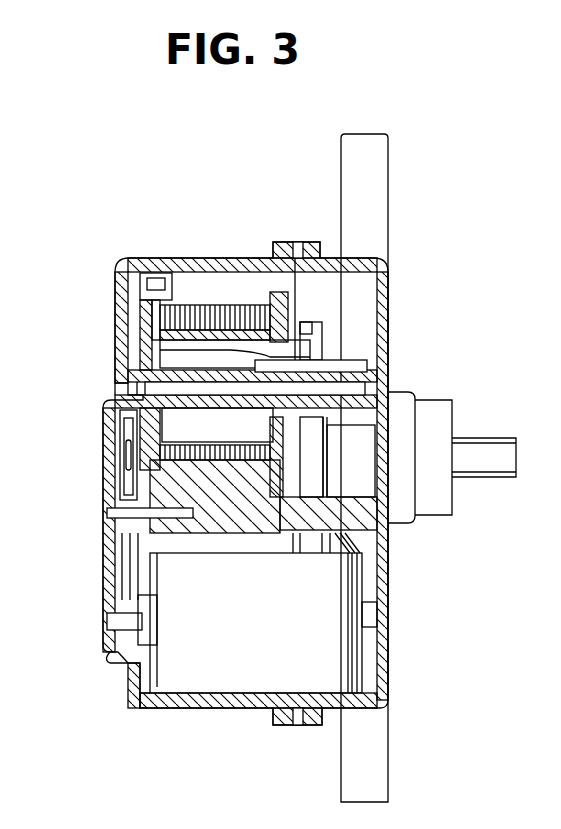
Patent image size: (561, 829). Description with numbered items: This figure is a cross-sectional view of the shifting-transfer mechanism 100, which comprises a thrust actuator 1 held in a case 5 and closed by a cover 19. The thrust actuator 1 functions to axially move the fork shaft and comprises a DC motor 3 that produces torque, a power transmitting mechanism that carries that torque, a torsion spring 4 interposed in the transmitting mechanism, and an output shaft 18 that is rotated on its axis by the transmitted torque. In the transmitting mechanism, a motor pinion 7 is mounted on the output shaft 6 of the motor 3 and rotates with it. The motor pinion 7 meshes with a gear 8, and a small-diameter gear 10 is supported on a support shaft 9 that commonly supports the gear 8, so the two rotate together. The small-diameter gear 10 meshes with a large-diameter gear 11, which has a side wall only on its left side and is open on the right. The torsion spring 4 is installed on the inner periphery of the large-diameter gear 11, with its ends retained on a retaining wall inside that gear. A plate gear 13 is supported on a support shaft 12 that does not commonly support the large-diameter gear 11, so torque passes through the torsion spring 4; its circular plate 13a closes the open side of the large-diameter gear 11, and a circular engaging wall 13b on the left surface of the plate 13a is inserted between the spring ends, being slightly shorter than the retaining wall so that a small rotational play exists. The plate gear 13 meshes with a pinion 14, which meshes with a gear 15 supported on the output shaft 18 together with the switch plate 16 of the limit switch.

The shifting-transfer mechanism 100 is at (410, 255).
The thrust actuator 1 is at (348, 348).
The DC motor 3 is at (232, 677).
The torsion spring 4 is at (217, 305).
The case 5 is at (389, 641).
The output shaft of the motor 6 is at (130, 620).
The motor pinion 7 is at (112, 648).
The gear 8 is at (150, 558).
The support shaft 9 is at (150, 512).
The small-diameter gear 10 is at (155, 490).
The large-diameter gear 11 is at (150, 292).
The support shaft 12 is at (118, 385).
The plate gear 13 is at (160, 348).
The circular plate 13a is at (275, 328).
The engaging wall 13b is at (155, 440).
The pinion 14 is at (320, 372).
The gear 15 is at (395, 398).
The switch plate 16 is at (390, 442).
The output shaft 18 is at (483, 467).
The cover 19 is at (160, 700).